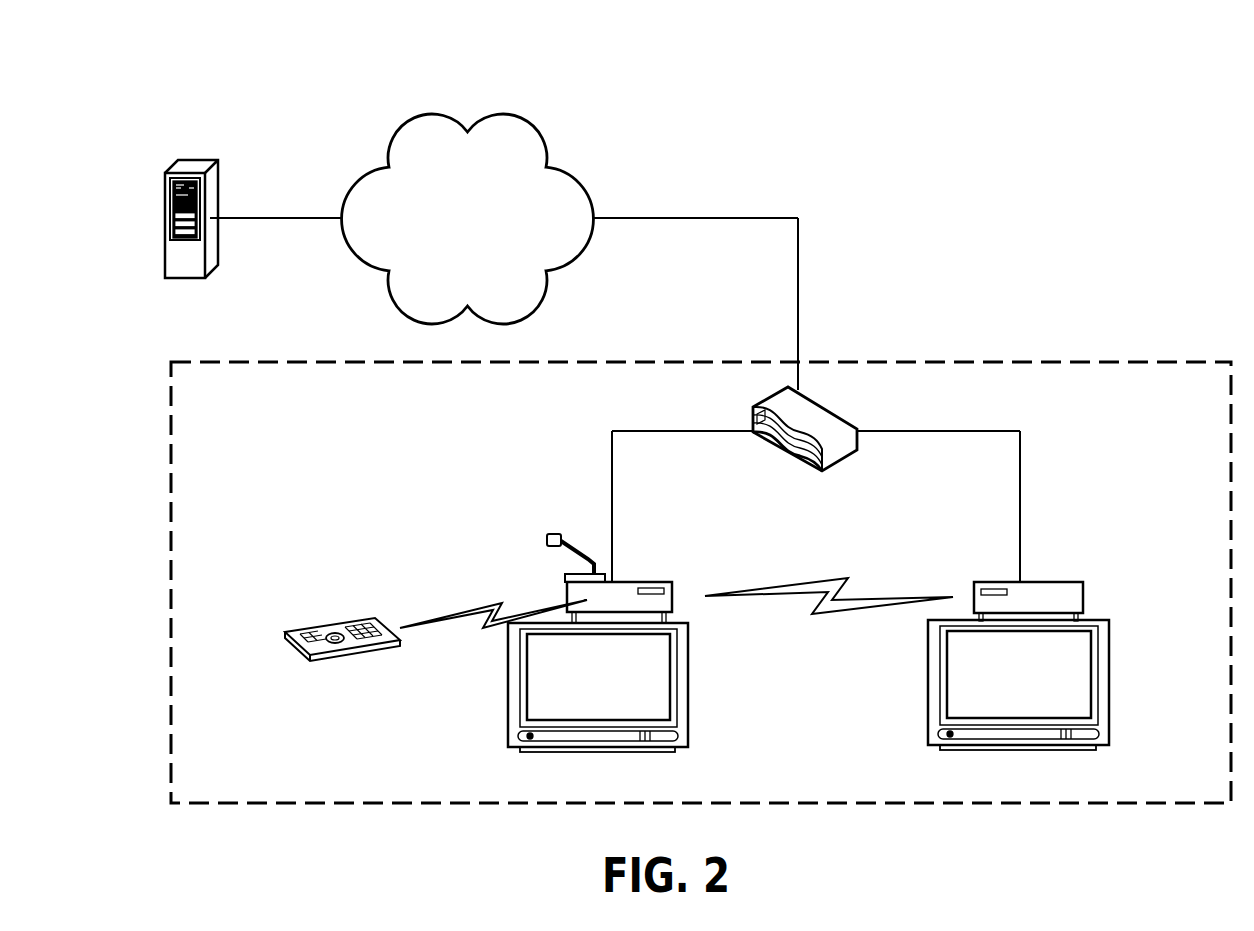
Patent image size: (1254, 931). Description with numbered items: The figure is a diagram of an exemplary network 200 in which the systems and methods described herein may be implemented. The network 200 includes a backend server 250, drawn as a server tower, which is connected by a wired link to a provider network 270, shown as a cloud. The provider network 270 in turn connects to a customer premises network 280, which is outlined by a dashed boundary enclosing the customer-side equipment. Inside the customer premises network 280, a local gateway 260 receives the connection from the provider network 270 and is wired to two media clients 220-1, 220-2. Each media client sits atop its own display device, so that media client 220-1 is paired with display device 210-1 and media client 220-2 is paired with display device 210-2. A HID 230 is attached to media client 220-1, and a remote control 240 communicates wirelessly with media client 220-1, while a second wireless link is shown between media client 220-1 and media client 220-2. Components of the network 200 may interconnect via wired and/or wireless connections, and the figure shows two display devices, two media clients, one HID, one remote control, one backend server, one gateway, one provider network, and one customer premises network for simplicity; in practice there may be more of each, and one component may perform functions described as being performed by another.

The network 200 is at (1096, 50).
The backend server 250 is at (174, 160).
The provider network 270 is at (487, 259).
The customer premises network 280 is at (1037, 341).
The local gateway 260 is at (830, 411).
The HID 230 is at (548, 538).
The remote control 240 is at (313, 628).
The media client 220-1 is at (705, 557).
The media client 220-2 is at (1072, 582).
The display device 210-1 is at (688, 676).
The display device 210-2 is at (1109, 675).